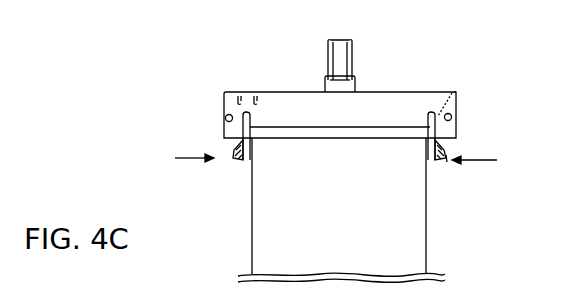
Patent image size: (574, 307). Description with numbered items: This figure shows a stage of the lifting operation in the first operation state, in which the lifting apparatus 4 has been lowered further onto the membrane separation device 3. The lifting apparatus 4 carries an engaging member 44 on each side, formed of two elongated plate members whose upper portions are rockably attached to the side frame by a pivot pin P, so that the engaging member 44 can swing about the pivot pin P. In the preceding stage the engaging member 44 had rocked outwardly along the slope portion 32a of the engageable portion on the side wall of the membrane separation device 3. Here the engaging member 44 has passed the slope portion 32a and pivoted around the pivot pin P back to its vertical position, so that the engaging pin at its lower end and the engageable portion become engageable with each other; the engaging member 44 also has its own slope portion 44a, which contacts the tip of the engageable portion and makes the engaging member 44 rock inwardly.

The lifting apparatus 4 is at (388, 96).
The pivot pin P is at (455, 91).
The engaging member 44 is at (458, 120).
The slope portion of the engaging member 44a is at (443, 158).
The slope portion of the engageable portion 32a is at (444, 154).
The membrane separation device 3 is at (425, 257).